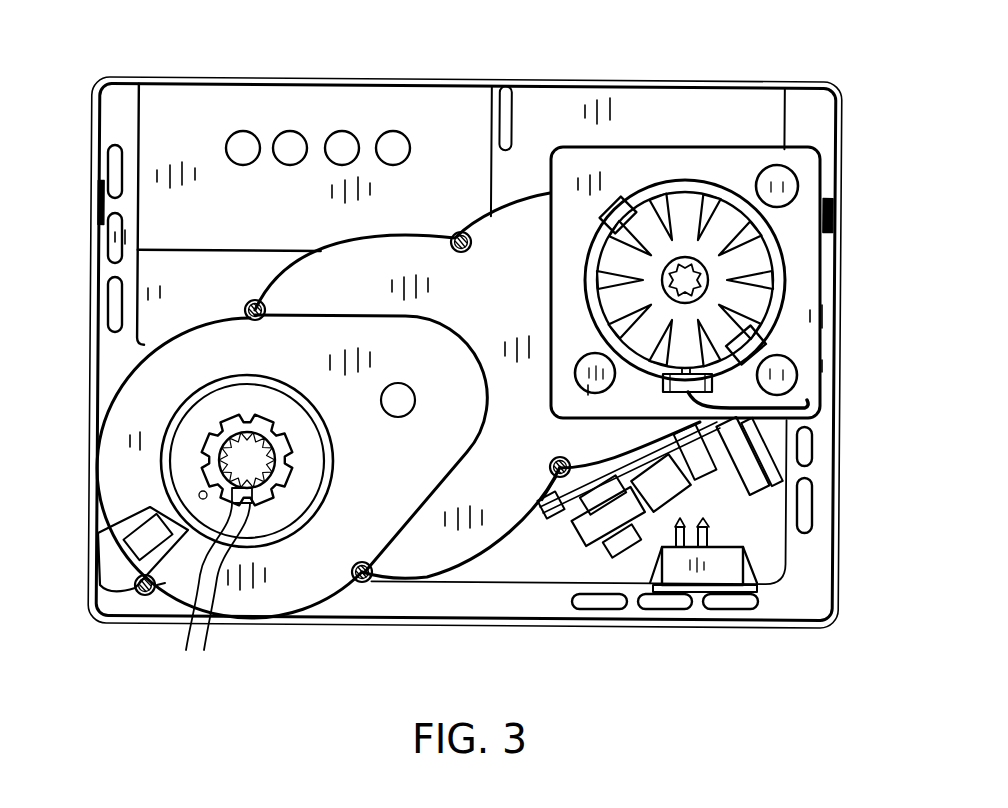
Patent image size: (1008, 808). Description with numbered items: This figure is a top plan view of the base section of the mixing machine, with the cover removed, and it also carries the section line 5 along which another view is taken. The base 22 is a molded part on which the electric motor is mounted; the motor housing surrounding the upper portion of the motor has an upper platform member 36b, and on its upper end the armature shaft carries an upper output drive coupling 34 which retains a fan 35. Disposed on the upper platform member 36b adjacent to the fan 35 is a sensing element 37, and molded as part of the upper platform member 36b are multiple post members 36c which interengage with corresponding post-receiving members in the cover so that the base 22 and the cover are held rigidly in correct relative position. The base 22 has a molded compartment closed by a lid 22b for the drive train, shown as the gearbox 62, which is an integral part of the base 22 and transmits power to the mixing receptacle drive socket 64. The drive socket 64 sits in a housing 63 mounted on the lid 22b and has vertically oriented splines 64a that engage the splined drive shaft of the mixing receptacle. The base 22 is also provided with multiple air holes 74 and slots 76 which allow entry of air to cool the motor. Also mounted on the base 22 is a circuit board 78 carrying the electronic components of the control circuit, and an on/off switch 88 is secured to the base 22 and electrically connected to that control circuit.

The base 22 is at (520, 80).
The lid 22b is at (297, 620).
The upper output drive coupling 34 is at (708, 274).
The fan 35 is at (752, 303).
The upper platform member 36b is at (806, 346).
The post members 36c is at (767, 166).
The sensing element 37 is at (672, 392).
The gearbox 62 is at (486, 577).
The housing 63 is at (220, 420).
The drive socket 64 is at (220, 460).
The splines 64a is at (186, 645).
The air holes 74 is at (290, 131).
The slots 76 is at (108, 297).
The circuit board 78 is at (553, 470).
The on/off switch 88 is at (745, 548).
The section line 5- 5 is at (845, 213).